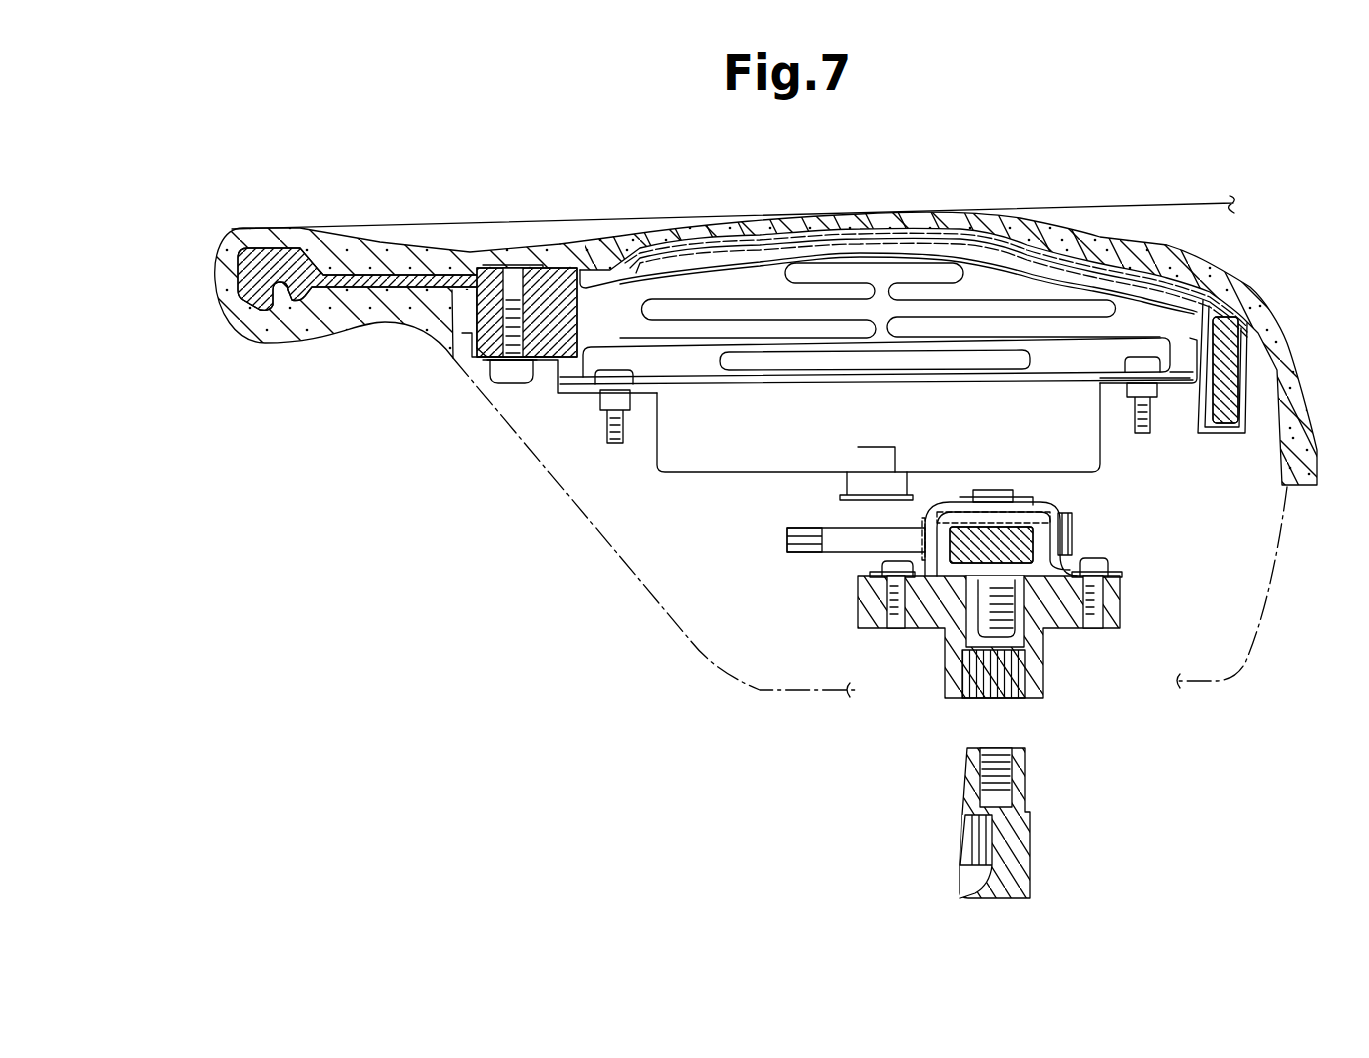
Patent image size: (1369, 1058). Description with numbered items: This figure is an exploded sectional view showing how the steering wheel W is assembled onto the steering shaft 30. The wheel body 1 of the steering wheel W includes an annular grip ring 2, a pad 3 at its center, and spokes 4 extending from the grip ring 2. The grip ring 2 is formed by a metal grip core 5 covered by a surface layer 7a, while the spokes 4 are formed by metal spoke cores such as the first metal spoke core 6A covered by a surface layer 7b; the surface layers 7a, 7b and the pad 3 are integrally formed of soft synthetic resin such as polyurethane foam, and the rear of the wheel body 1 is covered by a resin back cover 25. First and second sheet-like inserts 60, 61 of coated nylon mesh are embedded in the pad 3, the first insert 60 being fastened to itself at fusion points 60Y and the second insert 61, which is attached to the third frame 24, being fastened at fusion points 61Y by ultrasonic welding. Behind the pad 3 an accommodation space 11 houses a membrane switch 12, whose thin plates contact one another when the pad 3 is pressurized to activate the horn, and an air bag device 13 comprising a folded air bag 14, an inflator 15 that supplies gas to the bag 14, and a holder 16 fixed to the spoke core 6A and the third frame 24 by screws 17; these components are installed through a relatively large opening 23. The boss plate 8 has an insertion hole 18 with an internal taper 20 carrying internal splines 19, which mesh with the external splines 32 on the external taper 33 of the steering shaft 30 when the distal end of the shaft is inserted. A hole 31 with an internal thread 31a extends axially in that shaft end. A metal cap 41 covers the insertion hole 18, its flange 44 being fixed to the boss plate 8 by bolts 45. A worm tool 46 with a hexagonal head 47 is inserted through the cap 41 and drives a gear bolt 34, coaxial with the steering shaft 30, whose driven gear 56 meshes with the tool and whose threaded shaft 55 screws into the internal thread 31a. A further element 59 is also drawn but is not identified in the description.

The wheel body 1 is at (514, 195).
The steering wheel W is at (1098, 184).
The annular grip 2 is at (357, 277).
The pad 3 is at (766, 321).
The spokes 4 is at (425, 246).
The metal grip core 5 is at (256, 338).
The first metal spoke core 6A is at (419, 322).
The surface layer 7a is at (225, 264).
The surface layer 7b is at (357, 320).
The boss plate 8 is at (970, 607).
The accommodation space 11 is at (890, 300).
The membrane switch 12 is at (1028, 274).
The air bag device 13 is at (622, 332).
The folded air bag 14 is at (666, 301).
The inflator 15 is at (718, 380).
The holder 16 is at (591, 408).
The screws 17 is at (520, 383).
The insertion hole 18 is at (1037, 629).
The internal splines 19 is at (1006, 684).
The internal taper 20 is at (970, 696).
The opening 23 is at (625, 526).
The third frame 24 is at (1225, 426).
The back cover 25 is at (553, 472).
The steering shaft 30 is at (986, 838).
The hole 31 is at (978, 783).
The internal thread 31a is at (980, 768).
The external splines 32 is at (973, 841).
The external taper 33 is at (1028, 826).
The gear bolt 34 is at (973, 628).
The metal cap 41 is at (1049, 501).
The flange 44 is at (877, 576).
The bolts 45 is at (894, 558).
The worm tool 46 is at (832, 529).
The hexagonal head 47 is at (792, 555).
The threaded shaft 55 is at (1055, 600).
The driven gear 56 is at (1052, 532).
The connector 59 is at (958, 500).
The first sheet-like insert 60 is at (741, 242).
The fusion points 60Y is at (658, 243).
The second sheet-like insert 61 is at (945, 237).
The fusion points 61Y is at (1177, 276).